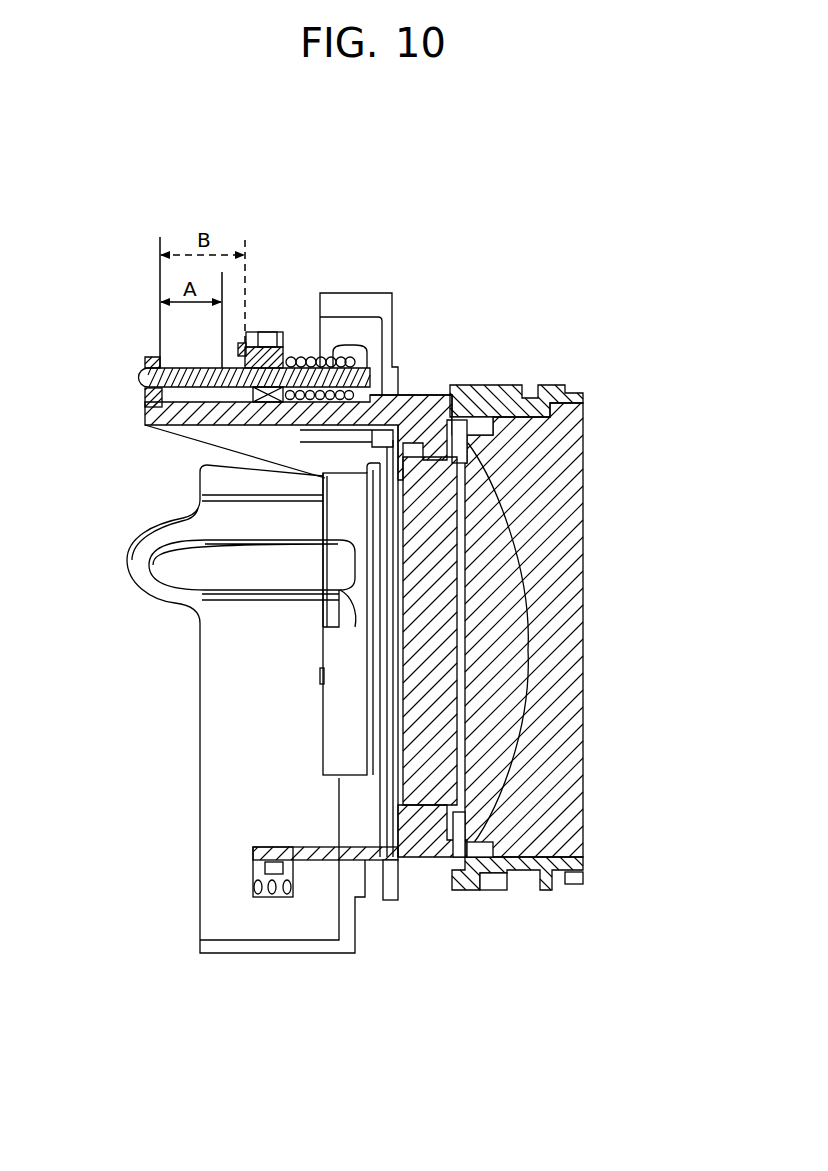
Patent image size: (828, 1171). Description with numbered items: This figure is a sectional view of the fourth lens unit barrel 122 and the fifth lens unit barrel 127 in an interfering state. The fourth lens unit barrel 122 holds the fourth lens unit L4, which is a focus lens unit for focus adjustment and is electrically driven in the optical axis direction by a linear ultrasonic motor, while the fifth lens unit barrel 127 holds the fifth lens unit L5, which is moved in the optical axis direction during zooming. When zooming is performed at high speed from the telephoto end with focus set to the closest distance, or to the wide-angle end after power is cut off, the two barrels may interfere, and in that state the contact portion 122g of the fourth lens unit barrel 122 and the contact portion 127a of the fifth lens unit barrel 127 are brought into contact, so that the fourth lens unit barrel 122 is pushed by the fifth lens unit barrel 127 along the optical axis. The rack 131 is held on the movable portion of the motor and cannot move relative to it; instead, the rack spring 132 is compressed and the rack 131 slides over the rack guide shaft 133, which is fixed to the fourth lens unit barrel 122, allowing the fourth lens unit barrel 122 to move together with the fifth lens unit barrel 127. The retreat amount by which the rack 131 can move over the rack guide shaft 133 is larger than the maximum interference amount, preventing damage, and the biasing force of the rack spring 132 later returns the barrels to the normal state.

The fourth lens unit barrel 122 is at (398, 848).
The contact portion 122g is at (448, 398).
The fifth lens unit barrel 127 is at (487, 867).
The contact portion 127a is at (448, 398).
The rack 131 is at (280, 333).
The rack spring 132 is at (320, 362).
The rack guide shaft 133 is at (143, 380).
The fourth lens unit L4 is at (438, 570).
The fifth lens unit L5 is at (548, 578).